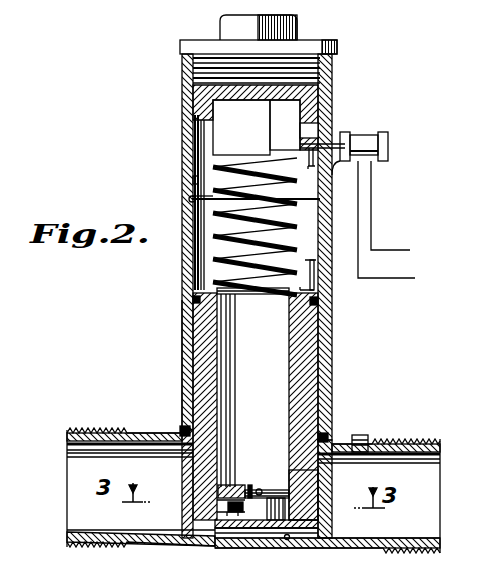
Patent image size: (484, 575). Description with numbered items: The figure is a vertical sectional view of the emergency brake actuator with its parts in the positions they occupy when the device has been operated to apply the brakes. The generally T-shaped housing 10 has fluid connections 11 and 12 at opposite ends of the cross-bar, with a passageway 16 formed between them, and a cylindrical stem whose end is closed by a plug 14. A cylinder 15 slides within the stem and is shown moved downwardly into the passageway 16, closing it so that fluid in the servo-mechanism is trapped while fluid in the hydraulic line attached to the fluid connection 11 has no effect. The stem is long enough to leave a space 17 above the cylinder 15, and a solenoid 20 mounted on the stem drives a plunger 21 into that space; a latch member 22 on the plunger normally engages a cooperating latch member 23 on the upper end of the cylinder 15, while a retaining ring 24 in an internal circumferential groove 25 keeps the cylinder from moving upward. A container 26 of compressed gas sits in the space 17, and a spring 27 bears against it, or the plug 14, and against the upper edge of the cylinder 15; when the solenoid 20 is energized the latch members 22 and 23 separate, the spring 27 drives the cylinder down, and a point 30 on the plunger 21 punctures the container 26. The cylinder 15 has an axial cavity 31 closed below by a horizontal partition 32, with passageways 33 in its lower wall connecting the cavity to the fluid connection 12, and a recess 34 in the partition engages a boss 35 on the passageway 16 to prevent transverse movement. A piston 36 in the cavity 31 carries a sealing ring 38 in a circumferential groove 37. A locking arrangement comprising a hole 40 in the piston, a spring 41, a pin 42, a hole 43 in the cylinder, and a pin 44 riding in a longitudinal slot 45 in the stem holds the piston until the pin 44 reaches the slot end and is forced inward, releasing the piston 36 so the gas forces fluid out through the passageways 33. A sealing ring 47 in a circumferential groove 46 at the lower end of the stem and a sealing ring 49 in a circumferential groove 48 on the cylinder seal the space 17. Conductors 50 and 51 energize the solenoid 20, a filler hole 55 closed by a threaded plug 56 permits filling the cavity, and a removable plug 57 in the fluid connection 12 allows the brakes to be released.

The housing 10 is at (333, 372).
The fluid connection 11 is at (78, 430).
The fluid connection 12 is at (428, 440).
The plug 14 is at (222, 32).
The cylinder 15 is at (192, 362).
The passageway 16 is at (68, 500).
The space 17 is at (197, 133).
The solenoid 20 is at (385, 142).
The plunger 21 is at (338, 142).
The latch member 22 is at (332, 173).
The latch member 23 is at (316, 292).
The retaining ring 24 is at (192, 199).
The internal circumferential groove 25 is at (193, 180).
The container 26 is at (262, 119).
The spring 27 is at (285, 248).
The point 30 is at (285, 125).
The axial cavity 31 is at (288, 394).
The horizontal partition 32 is at (318, 524).
The passageways 33 is at (310, 500).
The recess 34 is at (287, 539).
The boss 35 is at (222, 529).
The piston 36 is at (268, 517).
The circumferential groove 37 is at (215, 491).
The sealing ring 38 is at (290, 494).
The hole 40 is at (238, 514).
The spring 41 is at (227, 514).
The pin 42 is at (222, 504).
The hole 43 is at (218, 309).
The pin 44 is at (193, 327).
The slot 45 is at (192, 278).
The circumferential groove 46 is at (324, 435).
The sealing ring 47 is at (182, 430).
The circumferential groove 48 is at (318, 301).
The sealing ring 49 is at (194, 301).
The conductor 50 is at (405, 250).
The conductor 51 is at (410, 278).
The filler hole 55 is at (248, 490).
The threaded plug 56 is at (262, 492).
The removable plug 57 is at (365, 437).